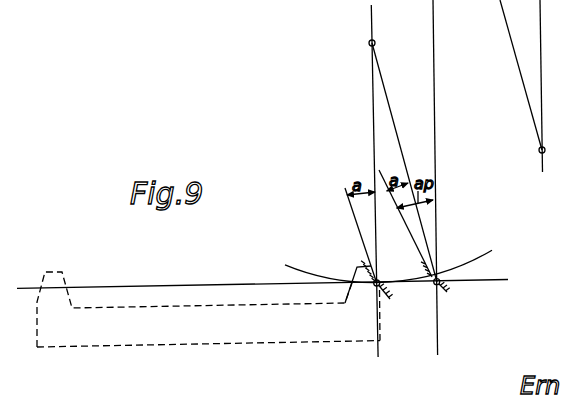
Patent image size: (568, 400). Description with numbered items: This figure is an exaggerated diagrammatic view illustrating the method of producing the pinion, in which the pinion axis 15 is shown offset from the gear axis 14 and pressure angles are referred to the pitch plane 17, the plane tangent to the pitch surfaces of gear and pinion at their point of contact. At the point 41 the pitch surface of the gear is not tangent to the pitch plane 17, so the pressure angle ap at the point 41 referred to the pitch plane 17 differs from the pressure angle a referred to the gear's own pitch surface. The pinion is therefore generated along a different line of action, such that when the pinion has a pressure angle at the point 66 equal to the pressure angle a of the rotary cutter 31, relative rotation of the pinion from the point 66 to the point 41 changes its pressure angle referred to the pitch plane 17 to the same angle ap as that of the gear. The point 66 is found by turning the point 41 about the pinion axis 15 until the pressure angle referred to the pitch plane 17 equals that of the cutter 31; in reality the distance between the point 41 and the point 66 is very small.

The gear axis 14 is at (545, 149).
The pinion axis 15 is at (375, 41).
The pitch plane 17 is at (498, 280).
The rotary cutter 31 is at (322, 336).
The point 41 is at (442, 292).
The point 66 is at (380, 288).